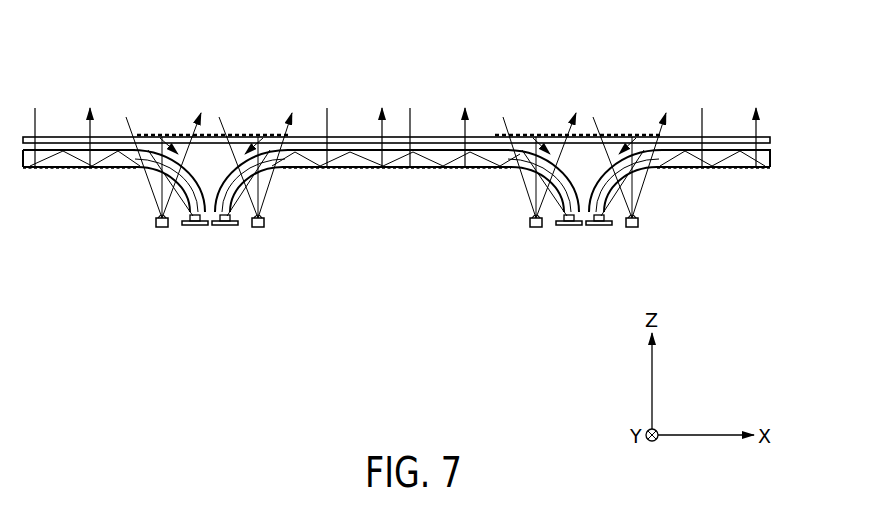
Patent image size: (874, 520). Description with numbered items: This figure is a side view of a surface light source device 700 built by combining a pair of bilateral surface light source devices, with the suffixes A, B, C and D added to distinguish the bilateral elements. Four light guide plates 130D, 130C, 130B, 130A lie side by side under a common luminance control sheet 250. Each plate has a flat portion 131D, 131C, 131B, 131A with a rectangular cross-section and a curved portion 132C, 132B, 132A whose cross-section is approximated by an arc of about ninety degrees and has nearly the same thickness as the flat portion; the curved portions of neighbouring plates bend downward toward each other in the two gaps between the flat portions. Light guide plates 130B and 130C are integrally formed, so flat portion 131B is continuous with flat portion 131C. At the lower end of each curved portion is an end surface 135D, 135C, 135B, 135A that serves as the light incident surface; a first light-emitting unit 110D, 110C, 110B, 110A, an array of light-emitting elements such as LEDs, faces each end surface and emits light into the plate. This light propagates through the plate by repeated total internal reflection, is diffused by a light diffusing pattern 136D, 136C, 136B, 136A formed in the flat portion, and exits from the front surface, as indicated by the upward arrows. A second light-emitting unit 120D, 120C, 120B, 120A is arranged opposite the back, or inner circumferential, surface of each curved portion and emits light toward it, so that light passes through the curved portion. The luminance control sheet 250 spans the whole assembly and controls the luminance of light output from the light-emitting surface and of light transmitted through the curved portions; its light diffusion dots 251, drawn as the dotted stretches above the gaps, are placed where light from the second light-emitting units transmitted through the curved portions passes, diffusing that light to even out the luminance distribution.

The surface light source device 700 is at (128, 58).
The luminance control sheet 250 is at (438, 137).
The light diffusion dots 251 is at (165, 137).
The light guide plate 130D is at (78, 150).
The light guide plate 130C is at (350, 150).
The light guide plate 130B is at (480, 150).
The light guide plate 130A is at (680, 150).
The flat portion 131D is at (118, 160).
The flat portion 131C is at (395, 158).
The flat portion 131B is at (455, 158).
The flat portion 131A is at (742, 152).
The curved portion 132C is at (265, 182).
The curved portion 132B is at (545, 184).
The curved portion 132A is at (637, 193).
The light diffusing pattern 136D is at (40, 168).
The light diffusing pattern 136C is at (360, 168).
The light diffusing pattern 136B is at (430, 168).
The light diffusing pattern 136A is at (735, 168).
The second light-emitting unit 120D is at (162, 229).
The second light-emitting unit 120C is at (263, 229).
The second light-emitting unit 120B is at (535, 229).
The second light-emitting unit 120A is at (635, 229).
The end surface 135D is at (182, 227).
The end surface 135C is at (238, 227).
The end surface 135B is at (557, 227).
The end surface 135A is at (612, 227).
The first light-emitting unit 110D is at (203, 227).
The first light-emitting unit 110C is at (213, 227).
The first light-emitting unit 110B is at (577, 227).
The first light-emitting unit 110A is at (588, 227).